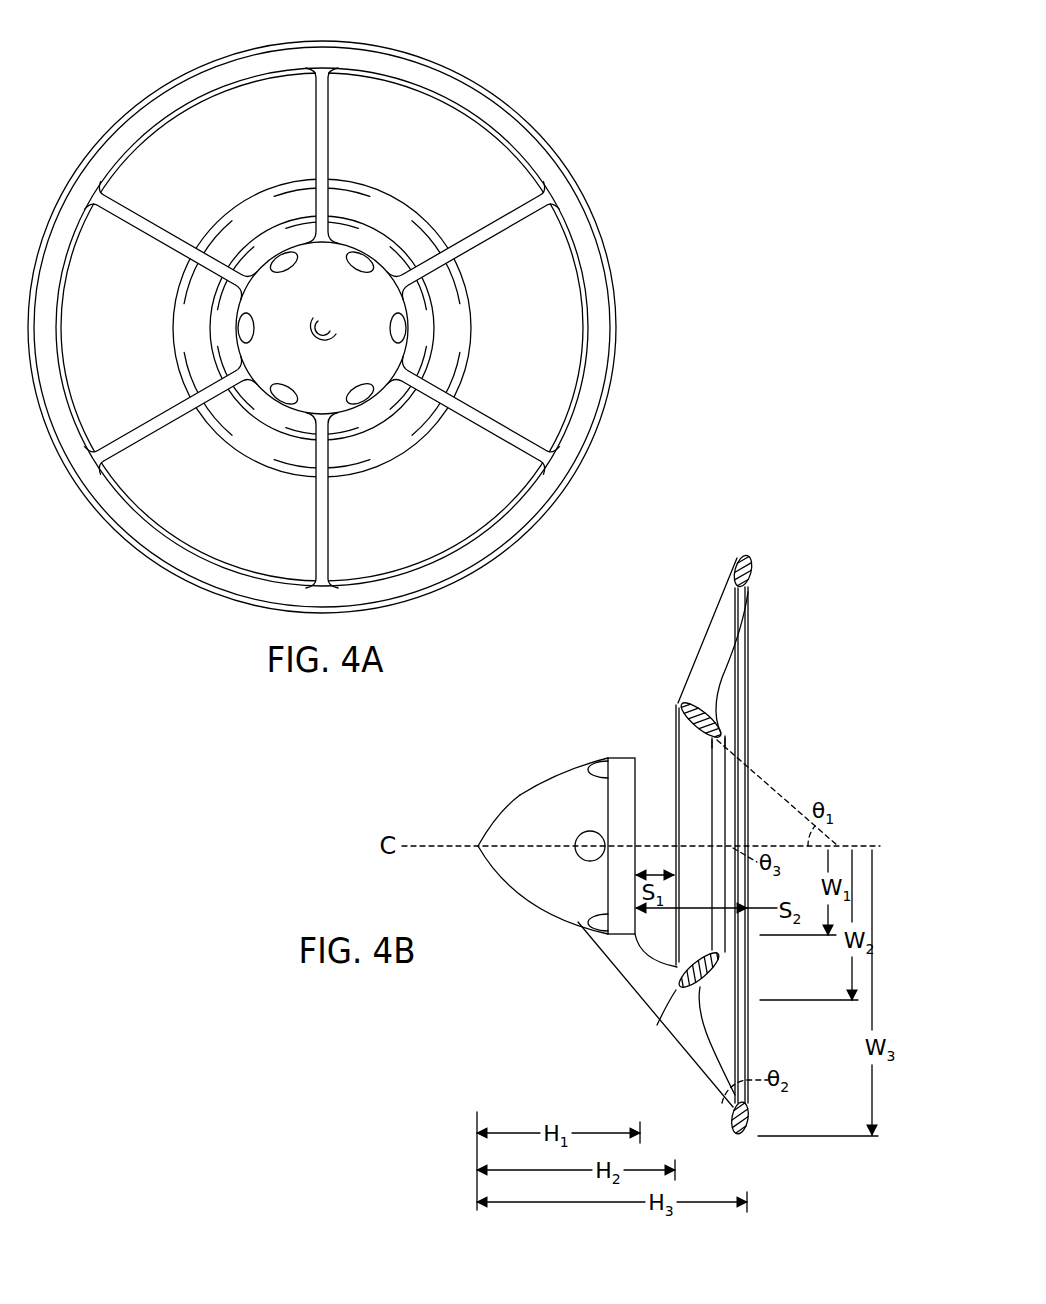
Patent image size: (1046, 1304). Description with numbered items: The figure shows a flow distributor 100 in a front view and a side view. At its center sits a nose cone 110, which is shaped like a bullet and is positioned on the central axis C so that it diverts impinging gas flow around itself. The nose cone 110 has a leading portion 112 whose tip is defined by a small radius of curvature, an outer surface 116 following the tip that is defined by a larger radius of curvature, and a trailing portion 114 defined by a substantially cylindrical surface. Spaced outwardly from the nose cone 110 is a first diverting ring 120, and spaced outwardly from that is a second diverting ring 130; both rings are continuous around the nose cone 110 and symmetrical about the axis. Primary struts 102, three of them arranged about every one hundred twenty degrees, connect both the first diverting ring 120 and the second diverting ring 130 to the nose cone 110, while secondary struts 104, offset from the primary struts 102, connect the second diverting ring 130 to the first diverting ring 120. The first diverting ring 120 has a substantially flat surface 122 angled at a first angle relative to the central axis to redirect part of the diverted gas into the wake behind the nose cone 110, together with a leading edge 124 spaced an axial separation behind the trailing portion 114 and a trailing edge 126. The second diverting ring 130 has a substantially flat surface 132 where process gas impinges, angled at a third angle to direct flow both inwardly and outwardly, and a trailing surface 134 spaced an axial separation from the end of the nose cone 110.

In FIG. 4A, the flow distributor 100 is at (90, 110).
In FIG. 4B, the flow distributor 100 is at (548, 690).
In FIG. 4A, the primary struts 102 is at (140, 237).
In FIG. 4B, the primary struts 102 is at (616, 975).
In FIG. 4A, the secondary struts 104 is at (316, 110).
In FIG. 4B, the secondary struts 104 is at (712, 620).
In FIG. 4A, the nose cone 110 is at (318, 256).
In FIG. 4B, the nose cone 110 is at (528, 792).
In FIG. 4B, the leading portion 112 is at (478, 845).
In FIG. 4B, the trailing portion 114 is at (616, 757).
In FIG. 4B, the outer surface 116 is at (546, 912).
In FIG. 4A, the first diverting ring 120 is at (388, 189).
In FIG. 4B, the first diverting ring 120 is at (672, 697).
In FIG. 4B, the substantially flat surface 122 is at (676, 726).
In FIG. 4B, the leading edge 124 is at (660, 1027).
In FIG. 4B, the trailing edge 126 is at (740, 950).
In FIG. 4A, the second diverting ring 130 is at (466, 82).
In FIG. 4B, the second diverting ring 130 is at (736, 556).
In FIG. 4B, the substantially flat surface 132 is at (734, 568).
In FIG. 4B, the trailing surface 134 is at (750, 569).